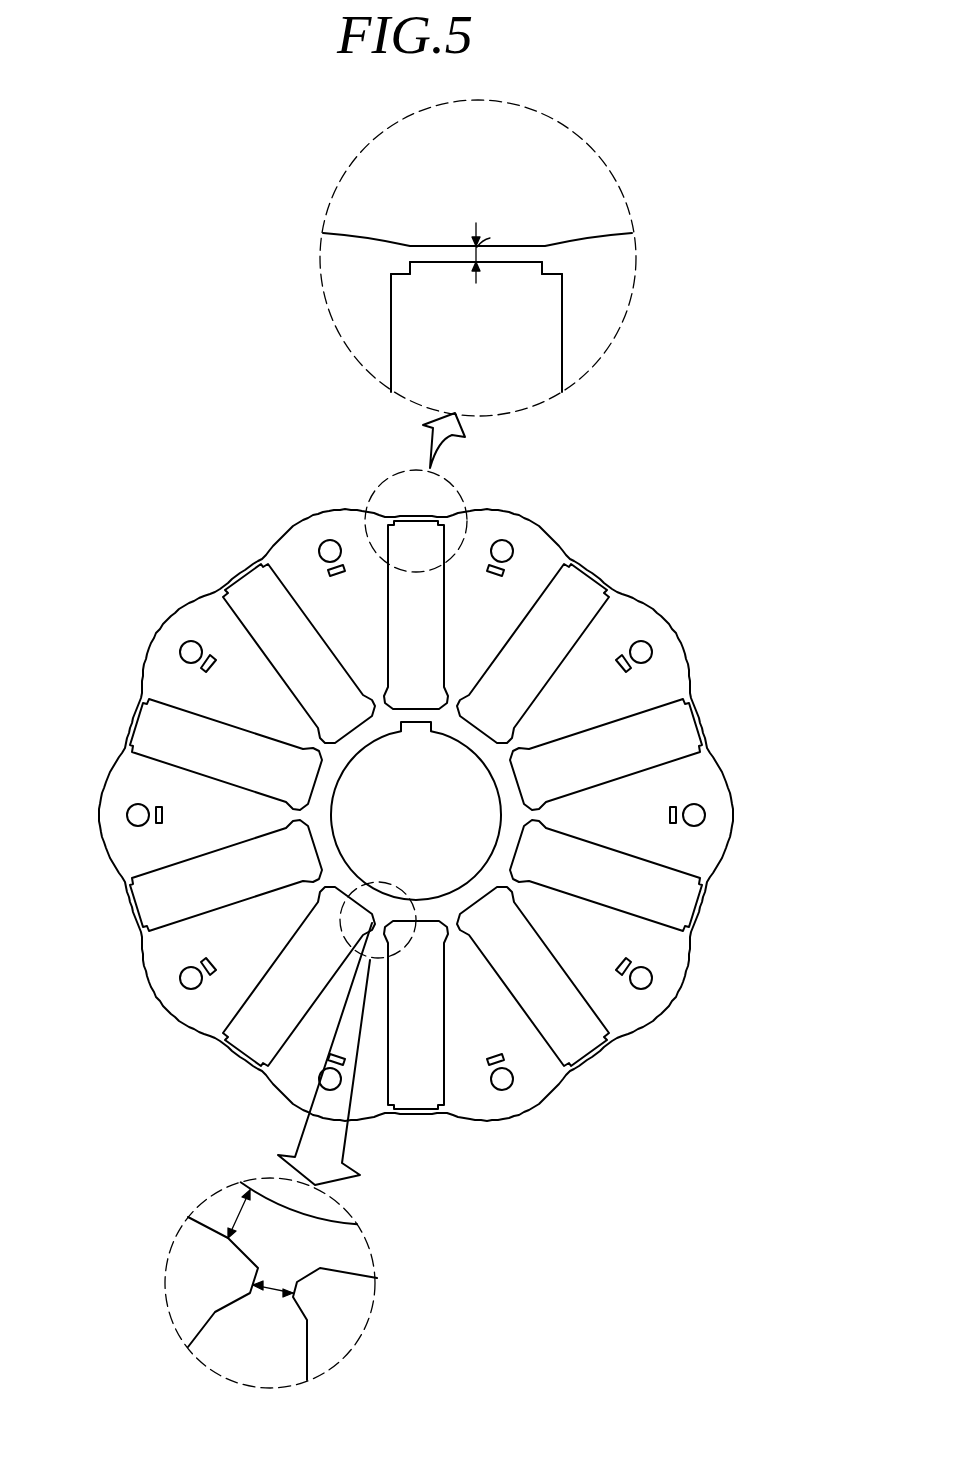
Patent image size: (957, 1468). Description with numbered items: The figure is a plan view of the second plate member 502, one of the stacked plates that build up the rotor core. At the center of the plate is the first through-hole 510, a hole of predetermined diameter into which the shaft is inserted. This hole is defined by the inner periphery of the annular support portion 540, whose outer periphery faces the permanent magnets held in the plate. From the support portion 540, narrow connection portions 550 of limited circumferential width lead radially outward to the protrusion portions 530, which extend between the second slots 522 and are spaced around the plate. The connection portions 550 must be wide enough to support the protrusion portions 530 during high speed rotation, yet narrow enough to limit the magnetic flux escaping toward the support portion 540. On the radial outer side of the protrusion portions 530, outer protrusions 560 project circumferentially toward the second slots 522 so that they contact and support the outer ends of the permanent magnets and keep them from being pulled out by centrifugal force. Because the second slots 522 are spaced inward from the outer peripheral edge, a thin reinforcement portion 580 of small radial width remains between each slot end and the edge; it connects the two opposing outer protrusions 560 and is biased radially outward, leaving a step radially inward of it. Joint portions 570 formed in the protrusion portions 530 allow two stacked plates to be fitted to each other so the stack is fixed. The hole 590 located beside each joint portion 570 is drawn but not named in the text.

The second plate member 502 is at (415, 744).
The first through-hole 510 is at (436, 819).
The second slot 522 is at (645, 888).
The protrusion portion 530 is at (285, 1065).
The support portion 540 is at (505, 840).
The connection portion 550 is at (387, 922).
The outer protrusion 560 is at (405, 277).
The joint portion 570 is at (212, 650).
The reinforcement portion 580 is at (447, 250).
The rivet hole 590 is at (127, 815).